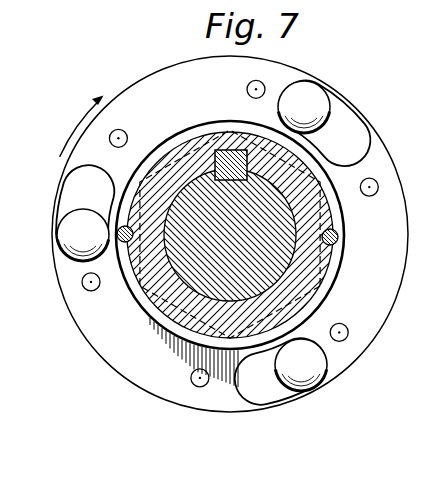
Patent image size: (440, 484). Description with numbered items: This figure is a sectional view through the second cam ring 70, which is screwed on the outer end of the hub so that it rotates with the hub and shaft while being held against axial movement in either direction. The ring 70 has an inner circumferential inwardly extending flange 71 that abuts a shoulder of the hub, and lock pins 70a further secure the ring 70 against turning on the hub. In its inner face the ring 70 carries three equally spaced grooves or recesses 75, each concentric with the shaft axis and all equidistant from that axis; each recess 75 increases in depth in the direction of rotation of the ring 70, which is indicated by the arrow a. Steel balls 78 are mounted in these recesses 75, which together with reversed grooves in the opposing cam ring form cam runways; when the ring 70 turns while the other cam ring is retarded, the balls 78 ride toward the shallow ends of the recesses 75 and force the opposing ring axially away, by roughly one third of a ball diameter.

The second cam ring 70 is at (166, 77).
The lock pins 70a is at (339, 238).
The inner circumferential inwardly extending flange 71 is at (143, 305).
The grooves or recesses 75 is at (72, 186).
The steel balls 78 is at (68, 231).
The arrow indicating direction of rotation a is at (74, 126).